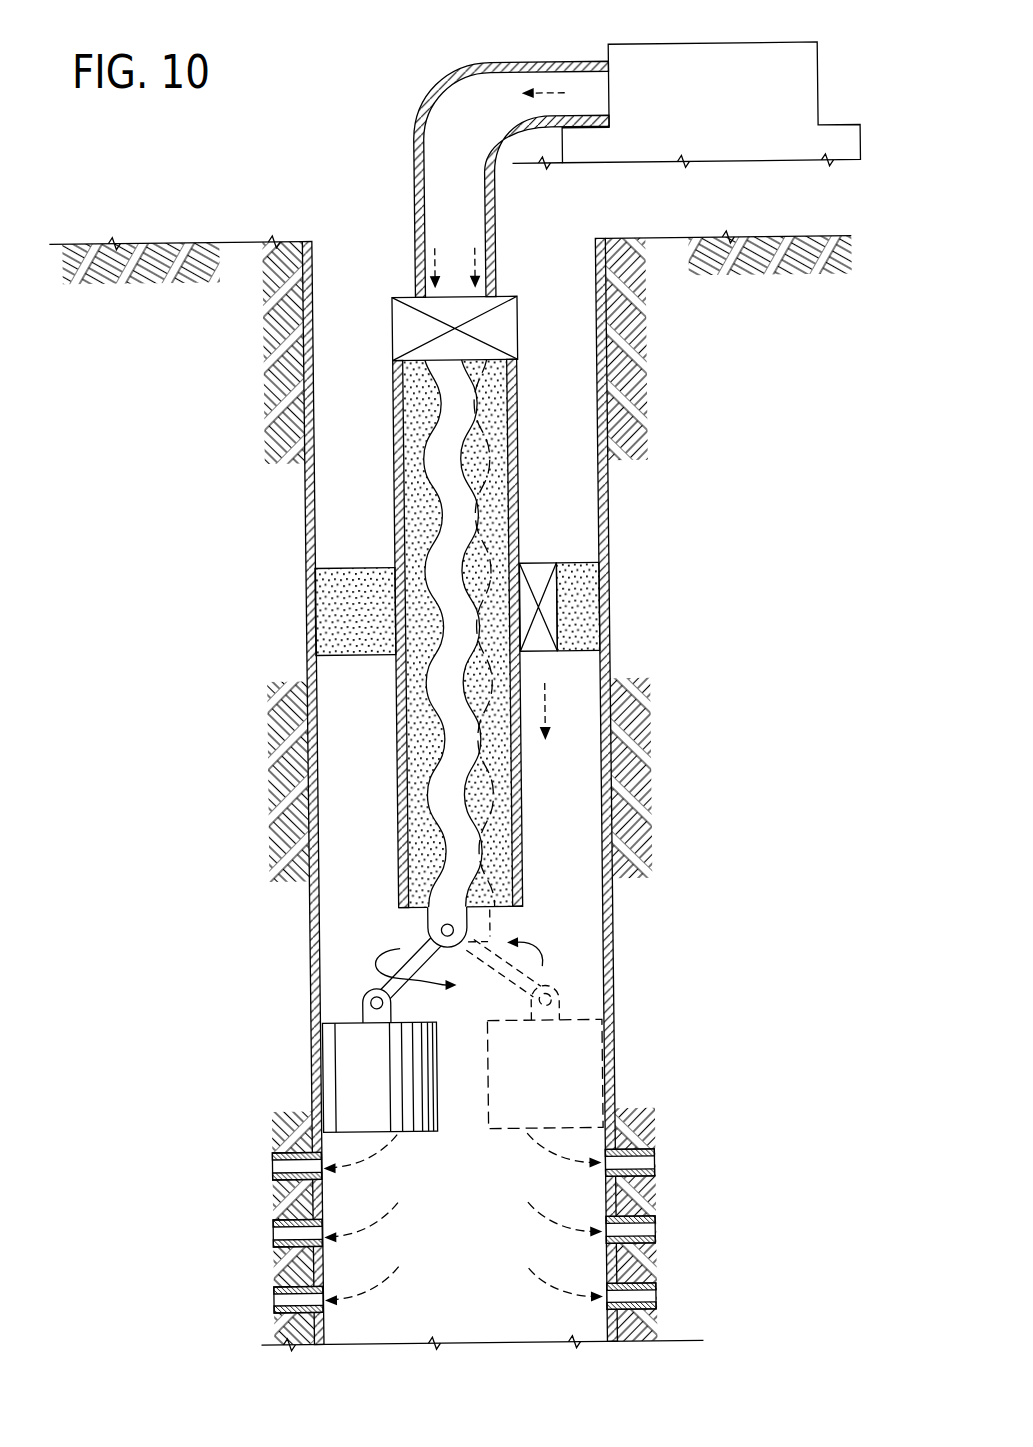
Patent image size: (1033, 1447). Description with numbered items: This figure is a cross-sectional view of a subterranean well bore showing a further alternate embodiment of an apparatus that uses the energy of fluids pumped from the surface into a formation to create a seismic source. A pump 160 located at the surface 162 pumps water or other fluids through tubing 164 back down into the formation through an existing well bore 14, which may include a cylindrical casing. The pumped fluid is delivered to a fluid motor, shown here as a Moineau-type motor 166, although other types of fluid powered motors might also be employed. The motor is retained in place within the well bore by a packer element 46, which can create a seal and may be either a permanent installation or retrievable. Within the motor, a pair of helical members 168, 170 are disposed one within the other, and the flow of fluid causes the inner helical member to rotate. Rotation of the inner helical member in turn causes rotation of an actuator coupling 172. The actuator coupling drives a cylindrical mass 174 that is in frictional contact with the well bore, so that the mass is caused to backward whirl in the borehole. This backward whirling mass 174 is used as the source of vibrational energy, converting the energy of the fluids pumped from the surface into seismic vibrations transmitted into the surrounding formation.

The well bore 14 is at (599, 379).
The packer element 46 is at (577, 603).
The pump 160 is at (740, 103).
The surface 162 is at (274, 240).
The tubing 164 is at (415, 155).
The Moineau-type motor 166 is at (518, 438).
The helical member 168 is at (495, 510).
The helical member 170 is at (452, 548).
The actuator coupling 172 is at (393, 962).
The cylindrical mass 174 is at (481, 1110).